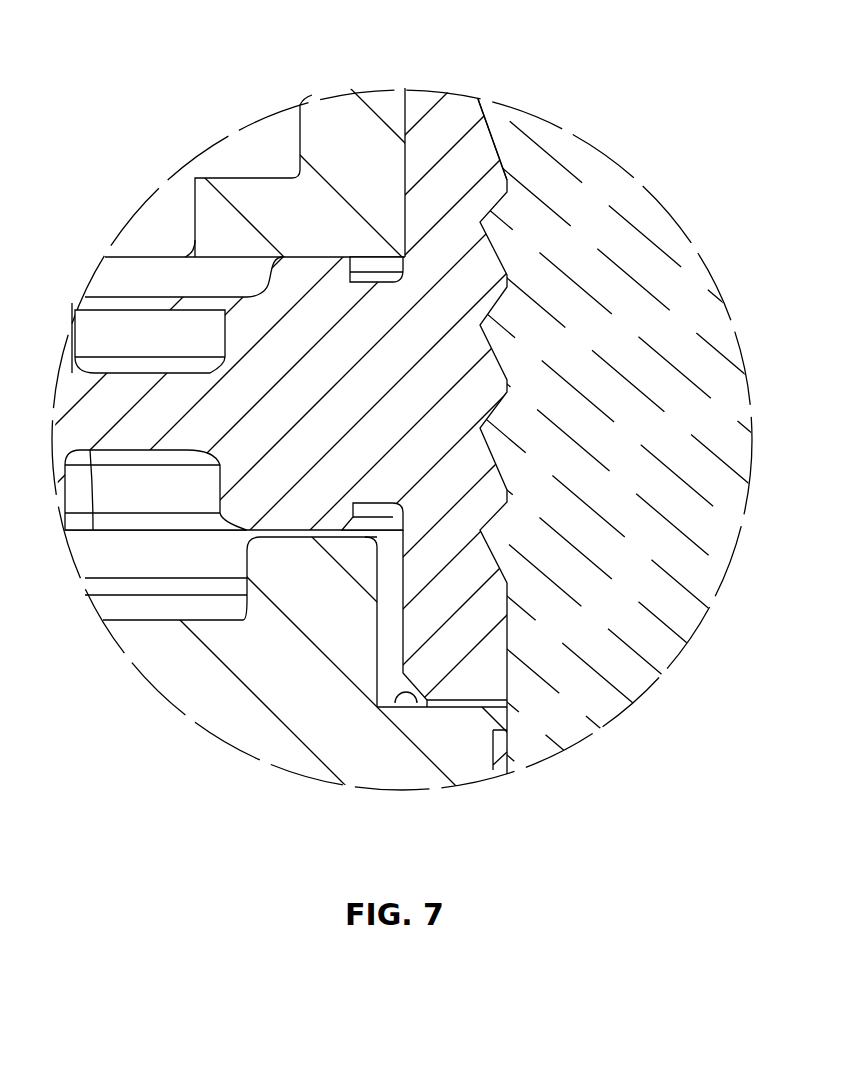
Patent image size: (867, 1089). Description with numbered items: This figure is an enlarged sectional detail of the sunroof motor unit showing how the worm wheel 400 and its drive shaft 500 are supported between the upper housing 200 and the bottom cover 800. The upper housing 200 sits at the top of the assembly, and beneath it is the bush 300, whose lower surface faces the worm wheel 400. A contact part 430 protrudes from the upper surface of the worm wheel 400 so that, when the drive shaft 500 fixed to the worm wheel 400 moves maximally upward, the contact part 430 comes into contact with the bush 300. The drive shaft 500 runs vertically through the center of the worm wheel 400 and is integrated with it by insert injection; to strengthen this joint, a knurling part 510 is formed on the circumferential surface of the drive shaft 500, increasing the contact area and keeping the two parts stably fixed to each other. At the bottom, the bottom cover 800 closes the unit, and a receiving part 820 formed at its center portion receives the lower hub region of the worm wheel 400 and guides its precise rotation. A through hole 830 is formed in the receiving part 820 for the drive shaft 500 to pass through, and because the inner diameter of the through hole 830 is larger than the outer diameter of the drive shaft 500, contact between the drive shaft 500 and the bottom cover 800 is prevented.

The upper housing 200 is at (259, 126).
The bush 300 is at (364, 91).
The worm wheel 400 is at (492, 103).
The contact part 430 is at (305, 265).
The drive shaft 500 is at (668, 212).
The knurling part 510 is at (497, 213).
The bottom cover 800 is at (224, 726).
The receiving part 820 is at (387, 707).
The through hole 830 is at (510, 780).